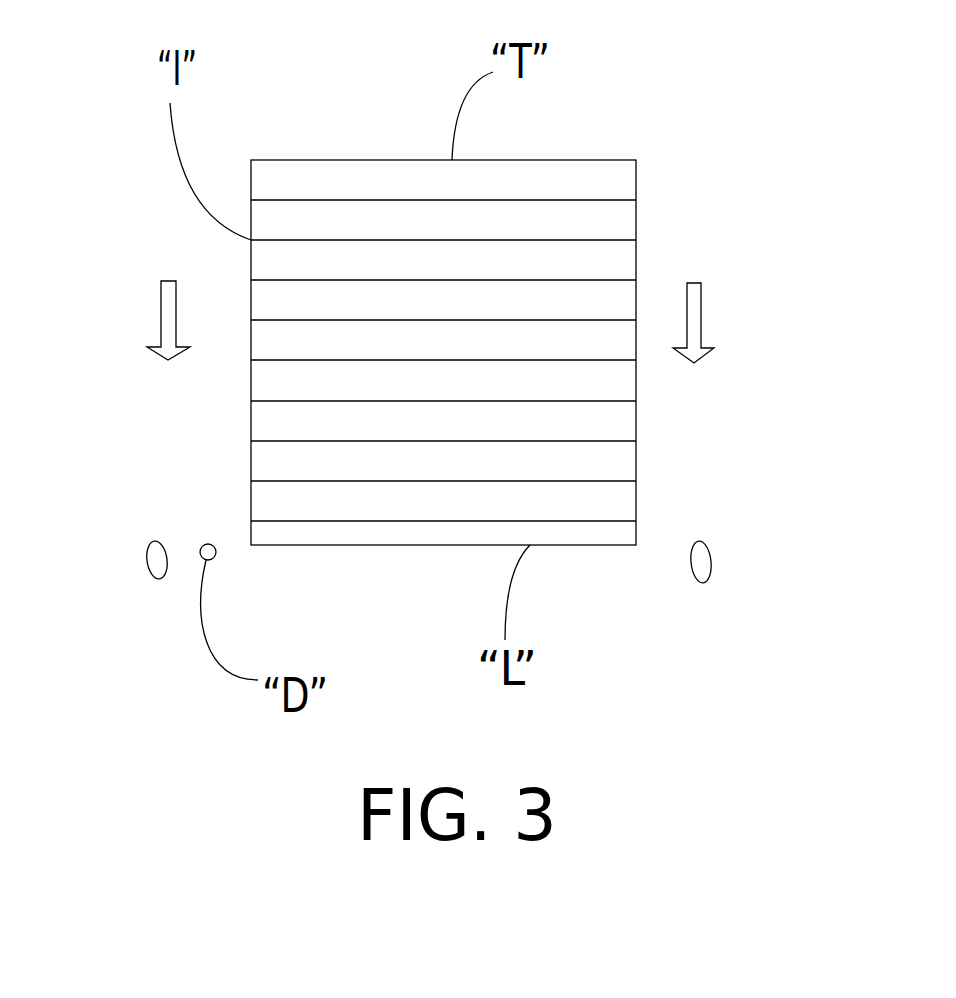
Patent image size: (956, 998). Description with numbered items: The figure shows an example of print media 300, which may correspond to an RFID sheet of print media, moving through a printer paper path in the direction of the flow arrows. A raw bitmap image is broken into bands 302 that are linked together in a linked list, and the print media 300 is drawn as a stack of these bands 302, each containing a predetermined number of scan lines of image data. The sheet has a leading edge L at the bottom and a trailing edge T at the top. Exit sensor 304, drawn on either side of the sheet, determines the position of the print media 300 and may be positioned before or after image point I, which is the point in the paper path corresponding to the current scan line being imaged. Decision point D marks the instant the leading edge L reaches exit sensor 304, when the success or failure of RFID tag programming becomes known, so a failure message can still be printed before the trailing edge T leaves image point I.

The print media 300 is at (307, 53).
The bands 302 is at (251, 425).
The exit sensor 304 is at (147, 556).